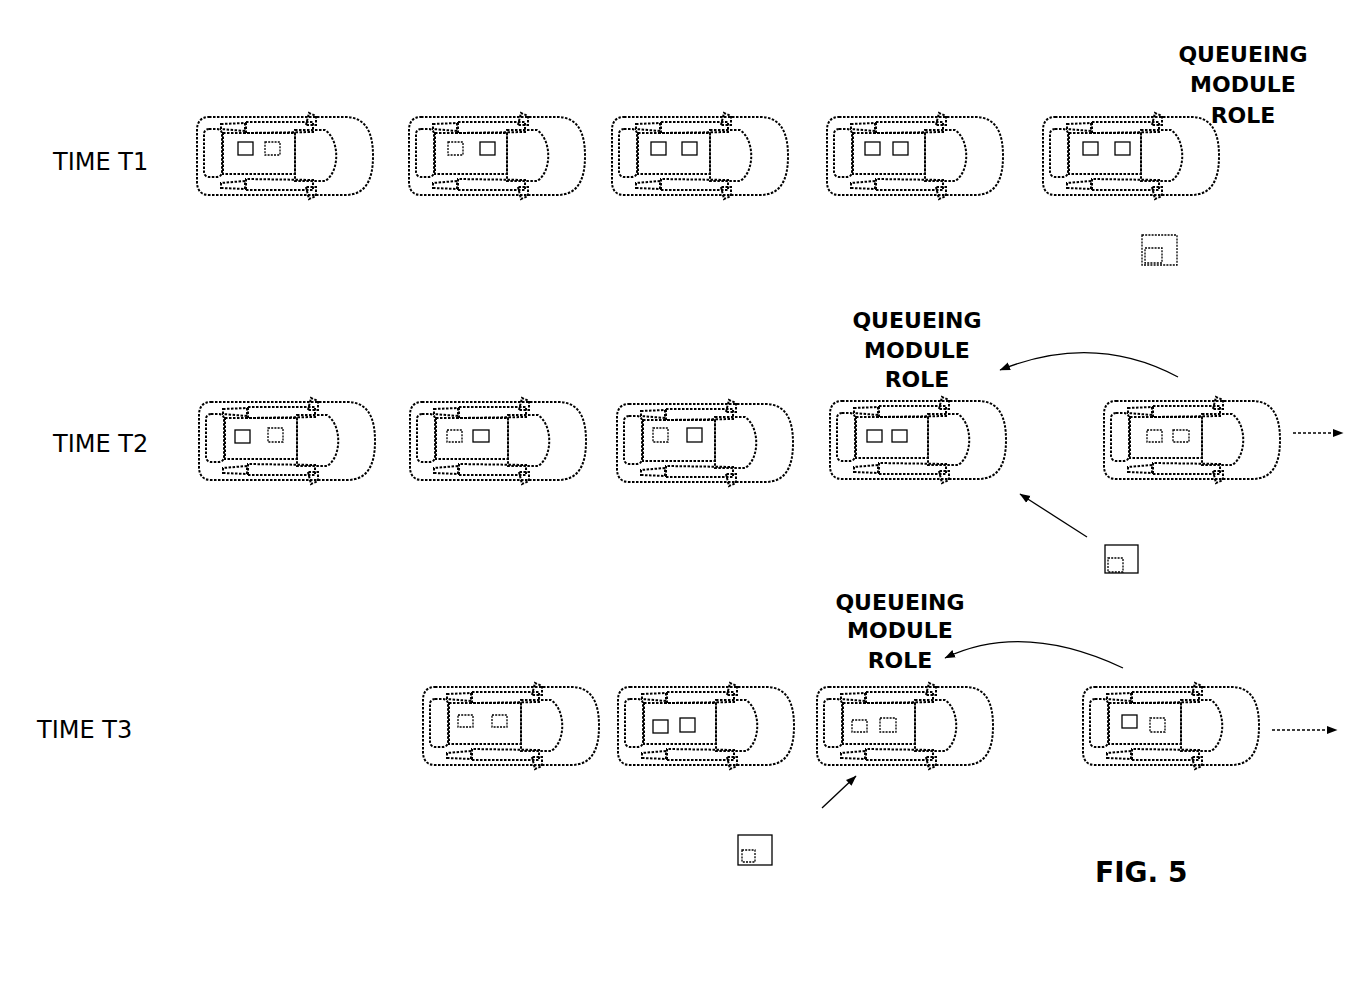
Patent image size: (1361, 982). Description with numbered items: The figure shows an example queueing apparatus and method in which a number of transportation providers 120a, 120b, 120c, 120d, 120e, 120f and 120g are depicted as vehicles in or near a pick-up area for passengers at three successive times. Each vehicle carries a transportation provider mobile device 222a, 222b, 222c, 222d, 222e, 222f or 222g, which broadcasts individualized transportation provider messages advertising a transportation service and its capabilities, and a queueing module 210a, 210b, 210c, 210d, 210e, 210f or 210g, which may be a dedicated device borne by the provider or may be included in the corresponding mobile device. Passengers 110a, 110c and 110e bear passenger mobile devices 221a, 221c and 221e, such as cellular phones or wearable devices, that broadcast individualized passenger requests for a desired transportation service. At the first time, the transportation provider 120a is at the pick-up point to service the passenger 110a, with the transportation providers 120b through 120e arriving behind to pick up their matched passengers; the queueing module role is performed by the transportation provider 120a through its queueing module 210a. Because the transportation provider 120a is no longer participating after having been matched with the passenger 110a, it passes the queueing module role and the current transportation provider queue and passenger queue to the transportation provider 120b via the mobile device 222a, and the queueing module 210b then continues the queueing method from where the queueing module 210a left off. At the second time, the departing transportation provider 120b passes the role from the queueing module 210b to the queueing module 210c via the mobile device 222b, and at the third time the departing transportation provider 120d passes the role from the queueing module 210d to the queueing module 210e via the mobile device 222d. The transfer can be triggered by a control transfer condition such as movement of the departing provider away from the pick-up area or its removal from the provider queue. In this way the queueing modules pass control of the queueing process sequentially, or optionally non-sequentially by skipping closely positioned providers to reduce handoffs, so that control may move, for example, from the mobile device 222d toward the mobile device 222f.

The passenger 110a is at (1177, 248).
The passenger 110c is at (1138, 553).
The passenger 110e is at (772, 845).
The transportation provider 120a is at (1066, 120).
The transportation provider 120b is at (870, 195).
The transportation provider 120c is at (703, 195).
The transportation provider 120d is at (473, 193).
The transportation provider 120e is at (283, 195).
The transportation provider 120f is at (297, 480).
The transportation provider 120g is at (488, 747).
The queueing module 210a is at (1121, 138).
The queueing module 210b is at (901, 138).
The queueing module 210c is at (691, 138).
The queueing module 210d is at (489, 138).
The queueing module 210e is at (274, 138).
The queueing module 210f is at (278, 427).
The queueing module 210g is at (501, 712).
The passenger mobile device 221a is at (1143, 256).
The passenger mobile device 221c is at (1107, 566).
The passenger mobile device 221e is at (740, 856).
The transportation provider mobile device 222a is at (1087, 138).
The transportation provider mobile device 222b is at (867, 138).
The transportation provider mobile device 222c is at (657, 138).
The transportation provider mobile device 222d is at (453, 138).
The transportation provider mobile device 222e is at (242, 138).
The transportation provider mobile device 222f is at (243, 446).
The transportation provider mobile device 222g is at (464, 712).